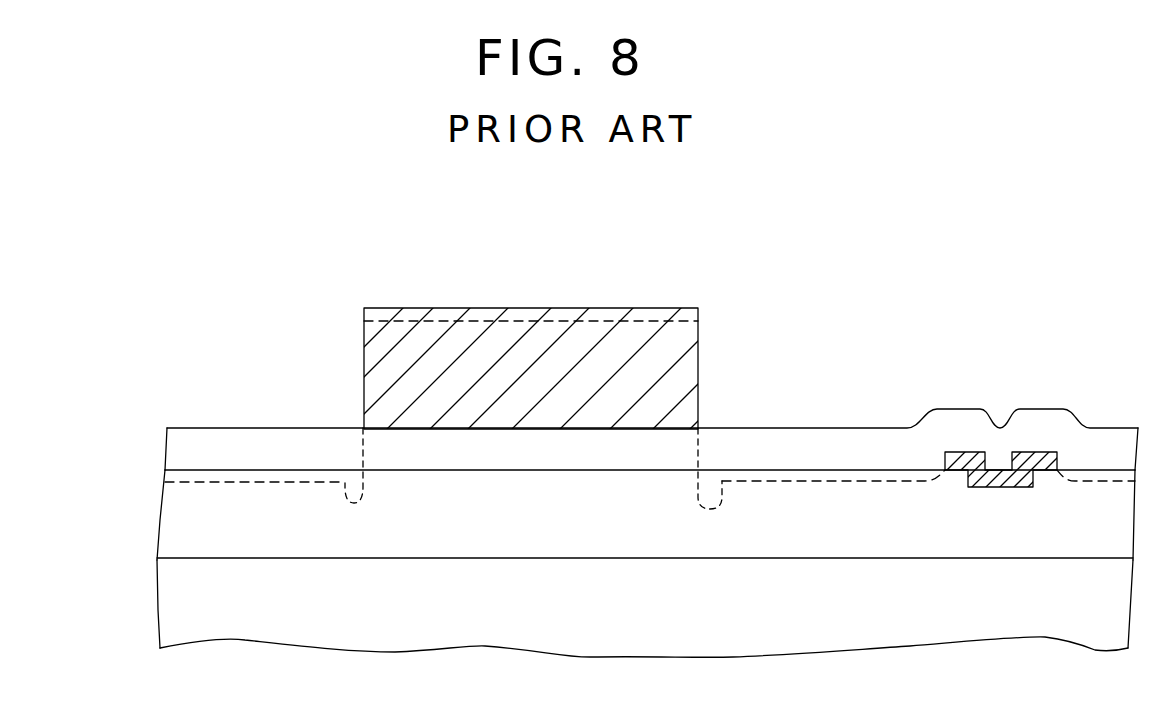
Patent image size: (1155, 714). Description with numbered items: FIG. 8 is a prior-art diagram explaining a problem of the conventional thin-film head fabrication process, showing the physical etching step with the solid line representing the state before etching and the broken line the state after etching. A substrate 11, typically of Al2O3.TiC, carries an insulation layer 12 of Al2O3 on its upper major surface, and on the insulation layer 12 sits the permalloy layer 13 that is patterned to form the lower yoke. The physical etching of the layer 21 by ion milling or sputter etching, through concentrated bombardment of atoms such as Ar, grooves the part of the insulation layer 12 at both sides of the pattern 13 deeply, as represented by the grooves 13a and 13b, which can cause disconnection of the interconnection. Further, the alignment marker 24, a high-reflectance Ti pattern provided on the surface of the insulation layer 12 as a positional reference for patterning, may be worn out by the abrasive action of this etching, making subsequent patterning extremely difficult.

The substrate 11 is at (186, 602).
The insulation layer 12 is at (185, 510).
The permalloy layer 13 is at (555, 340).
The groove 13a is at (352, 491).
The groove 13b is at (711, 492).
The layer 21 is at (243, 445).
The alignment marker 24 is at (960, 458).